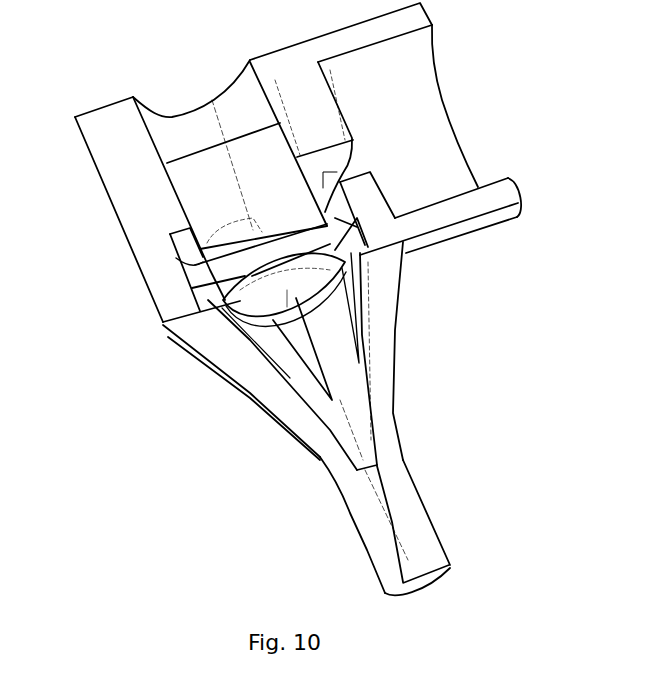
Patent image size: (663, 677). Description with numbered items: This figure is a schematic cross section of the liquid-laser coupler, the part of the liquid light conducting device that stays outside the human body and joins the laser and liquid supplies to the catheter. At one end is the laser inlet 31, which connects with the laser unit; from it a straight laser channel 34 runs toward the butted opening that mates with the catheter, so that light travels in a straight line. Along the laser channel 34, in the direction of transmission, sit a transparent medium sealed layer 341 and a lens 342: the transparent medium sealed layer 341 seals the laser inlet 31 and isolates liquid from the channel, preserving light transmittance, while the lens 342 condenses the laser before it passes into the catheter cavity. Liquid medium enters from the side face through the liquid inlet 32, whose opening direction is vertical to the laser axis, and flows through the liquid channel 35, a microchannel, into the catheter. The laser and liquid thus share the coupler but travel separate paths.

The laser inlet 31 is at (197, 110).
The liquid inlet 32 is at (405, 142).
The laser channel 34 is at (193, 124).
The transparent medium sealed layer 341 is at (227, 178).
The lens 342 is at (248, 295).
The liquid channel 35 is at (345, 178).